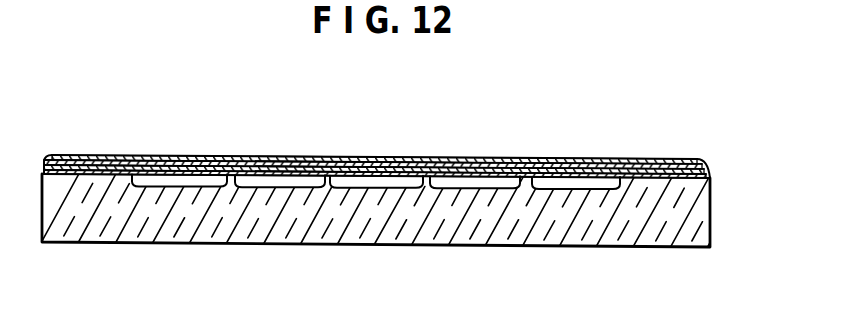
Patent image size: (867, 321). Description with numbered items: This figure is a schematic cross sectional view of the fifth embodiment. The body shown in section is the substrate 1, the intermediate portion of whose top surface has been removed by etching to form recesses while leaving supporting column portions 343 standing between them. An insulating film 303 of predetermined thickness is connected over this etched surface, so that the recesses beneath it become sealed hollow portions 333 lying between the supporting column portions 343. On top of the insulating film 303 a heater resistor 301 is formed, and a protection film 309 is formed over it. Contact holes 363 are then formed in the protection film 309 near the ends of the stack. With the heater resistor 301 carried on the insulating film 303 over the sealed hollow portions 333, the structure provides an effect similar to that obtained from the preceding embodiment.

The substrate 1 is at (404, 186).
The heater resistor 301 is at (574, 172).
The insulating film 303 is at (515, 182).
The protection film 309 is at (628, 167).
The sealed hollow portions 333 is at (278, 182).
The supporting column portions 343 is at (212, 168).
The contact holes 363 is at (66, 158).